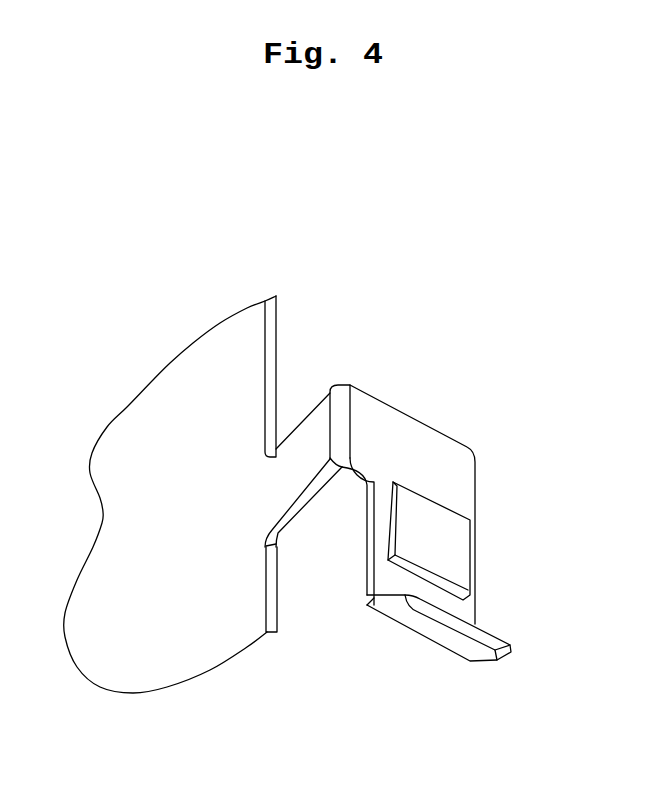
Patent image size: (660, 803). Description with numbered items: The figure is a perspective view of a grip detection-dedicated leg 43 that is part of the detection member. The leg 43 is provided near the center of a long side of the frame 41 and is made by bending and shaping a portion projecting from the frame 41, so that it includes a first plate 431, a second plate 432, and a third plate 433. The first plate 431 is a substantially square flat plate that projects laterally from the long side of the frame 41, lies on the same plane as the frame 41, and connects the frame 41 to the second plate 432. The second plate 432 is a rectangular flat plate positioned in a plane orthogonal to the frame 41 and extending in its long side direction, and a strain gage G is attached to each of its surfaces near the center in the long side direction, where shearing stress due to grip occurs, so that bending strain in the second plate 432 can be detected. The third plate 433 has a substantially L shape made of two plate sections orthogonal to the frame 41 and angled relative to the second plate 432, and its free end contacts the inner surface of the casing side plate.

The frame 41 is at (165, 458).
The grip detection-dedicated leg 43 is at (445, 510).
The first plate 431 is at (310, 448).
The second plate 432 is at (479, 504).
The third plate 433 is at (480, 647).
The strain gage G is at (447, 557).